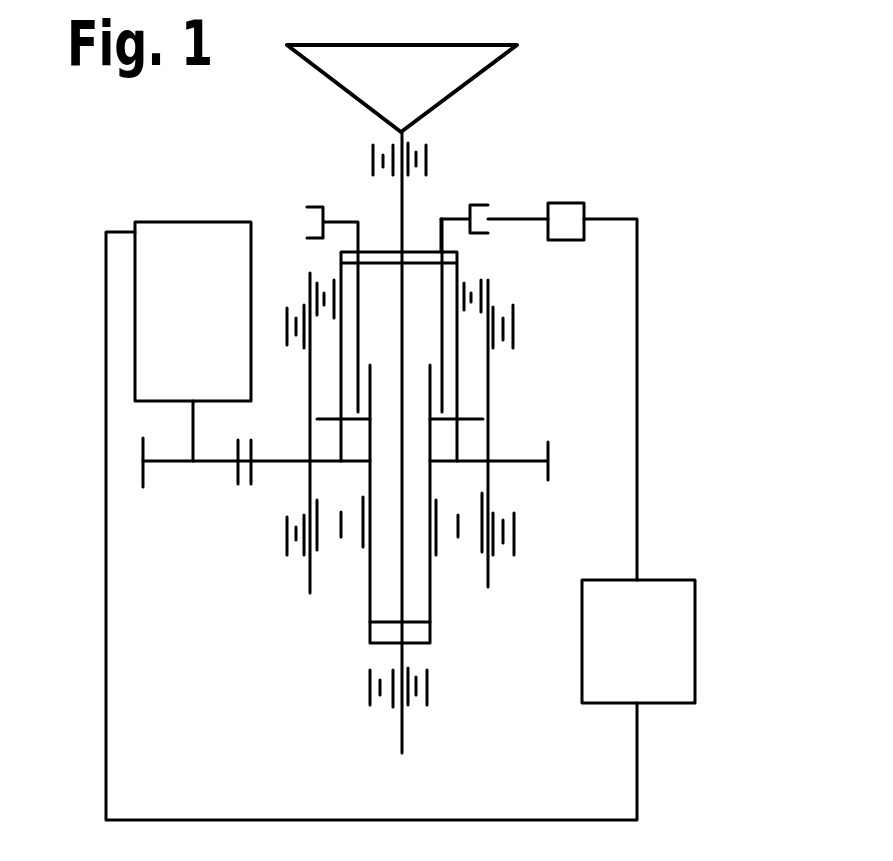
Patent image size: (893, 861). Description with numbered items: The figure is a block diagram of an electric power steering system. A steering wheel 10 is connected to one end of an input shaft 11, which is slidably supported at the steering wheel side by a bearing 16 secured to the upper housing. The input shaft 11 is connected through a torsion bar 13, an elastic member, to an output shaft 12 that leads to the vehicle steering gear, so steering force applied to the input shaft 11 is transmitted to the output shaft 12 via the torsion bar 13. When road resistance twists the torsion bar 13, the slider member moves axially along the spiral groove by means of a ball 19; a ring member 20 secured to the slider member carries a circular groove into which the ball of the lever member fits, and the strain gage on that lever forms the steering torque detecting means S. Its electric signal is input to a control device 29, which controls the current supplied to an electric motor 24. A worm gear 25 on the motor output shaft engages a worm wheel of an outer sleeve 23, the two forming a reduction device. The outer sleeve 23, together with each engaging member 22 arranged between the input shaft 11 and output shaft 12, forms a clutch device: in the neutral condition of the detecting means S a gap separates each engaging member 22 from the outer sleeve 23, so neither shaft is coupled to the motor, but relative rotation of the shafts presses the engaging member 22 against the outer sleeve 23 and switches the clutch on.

The steering wheel 10 is at (517, 46).
The input shaft 11 is at (402, 210).
The bearing 16 is at (422, 140).
The ring member 20 is at (480, 202).
The steering torque detecting means S is at (572, 203).
The ball 19 is at (443, 278).
The torsion bar 13 is at (378, 583).
The output shaft 12 is at (432, 607).
The outer sleeve 23 is at (490, 385).
The engaging member 22 is at (470, 459).
The worm gear 25 is at (143, 477).
The electric motor 24 is at (217, 236).
The control device 29 is at (675, 636).